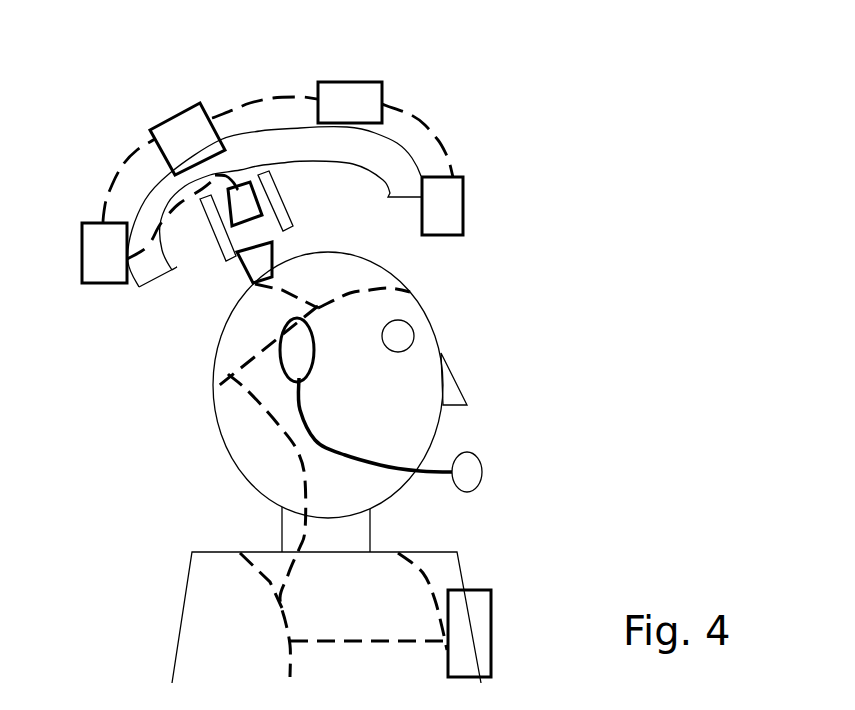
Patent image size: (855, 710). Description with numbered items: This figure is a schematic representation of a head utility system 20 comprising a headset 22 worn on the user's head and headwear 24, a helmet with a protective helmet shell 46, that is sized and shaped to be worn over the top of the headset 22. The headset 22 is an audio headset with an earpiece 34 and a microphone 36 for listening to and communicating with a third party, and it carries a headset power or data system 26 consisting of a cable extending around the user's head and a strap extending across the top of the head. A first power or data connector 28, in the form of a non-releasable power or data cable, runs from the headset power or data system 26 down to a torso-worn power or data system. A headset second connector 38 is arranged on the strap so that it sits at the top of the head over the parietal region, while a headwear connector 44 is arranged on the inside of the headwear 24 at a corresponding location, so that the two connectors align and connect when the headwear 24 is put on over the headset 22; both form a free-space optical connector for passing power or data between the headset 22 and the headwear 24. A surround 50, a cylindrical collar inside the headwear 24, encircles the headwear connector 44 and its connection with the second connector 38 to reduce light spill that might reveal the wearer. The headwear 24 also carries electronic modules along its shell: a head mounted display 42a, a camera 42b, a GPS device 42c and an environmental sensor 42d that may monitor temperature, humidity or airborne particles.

The head utility system 20 is at (531, 170).
The headset 22 is at (131, 442).
The headwear 24 is at (481, 102).
The headset power or data system 26 is at (341, 292).
The first power or data connector 28 is at (270, 421).
The earpiece 34 is at (311, 363).
The microphone 36 is at (484, 467).
The headset second connector 38 is at (247, 270).
The head mounted display 42a is at (443, 206).
The camera 42b is at (350, 102).
The GPS device 42c is at (187, 139).
The environmental sensor 42d is at (99, 254).
The headwear connector 44 is at (242, 208).
The protective helmet shell 46 is at (275, 207).
The surround 50 is at (281, 208).